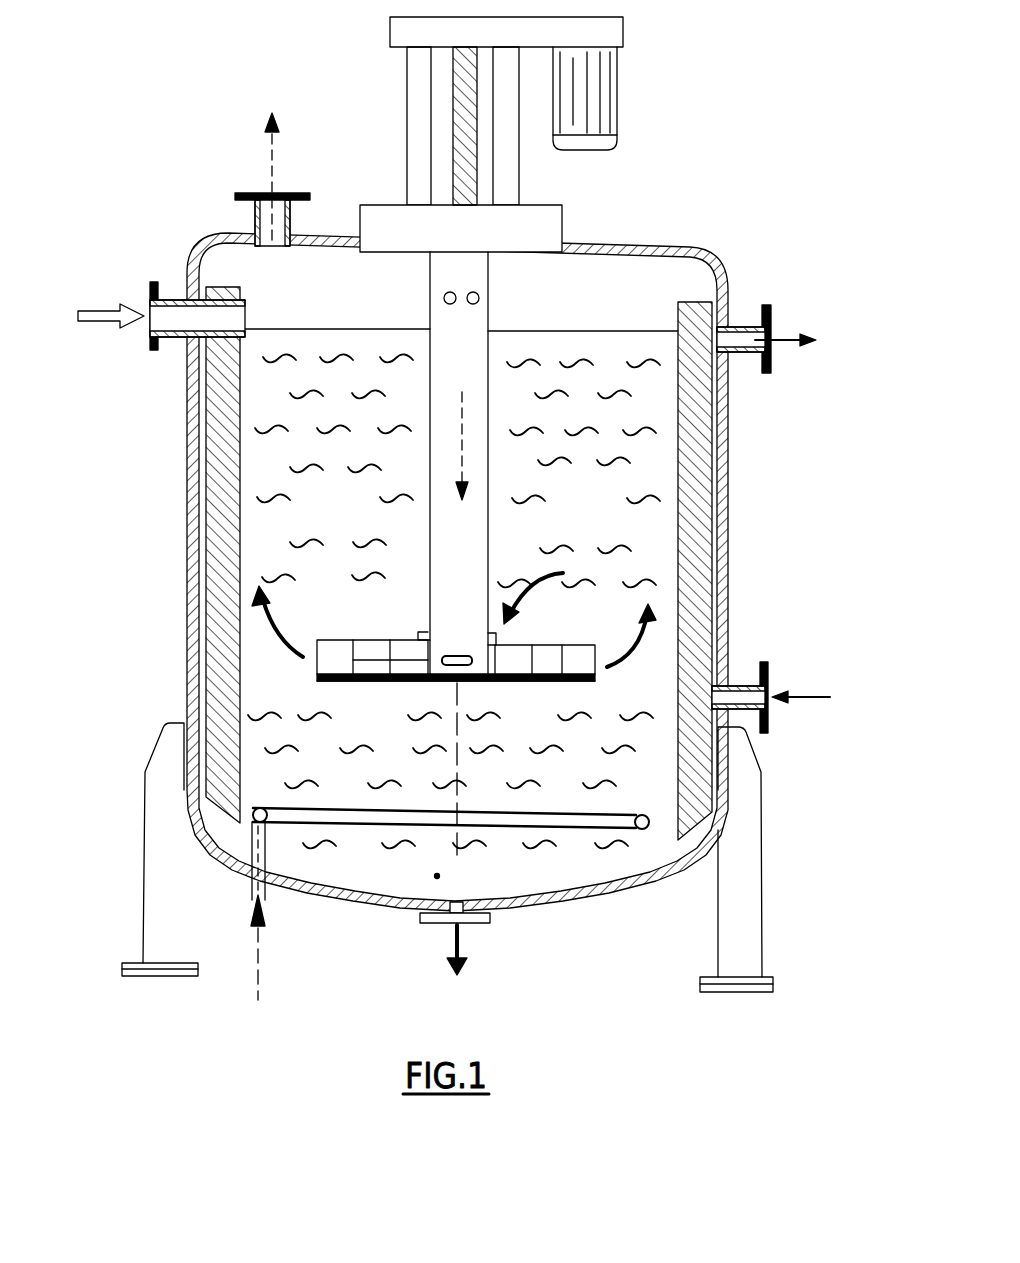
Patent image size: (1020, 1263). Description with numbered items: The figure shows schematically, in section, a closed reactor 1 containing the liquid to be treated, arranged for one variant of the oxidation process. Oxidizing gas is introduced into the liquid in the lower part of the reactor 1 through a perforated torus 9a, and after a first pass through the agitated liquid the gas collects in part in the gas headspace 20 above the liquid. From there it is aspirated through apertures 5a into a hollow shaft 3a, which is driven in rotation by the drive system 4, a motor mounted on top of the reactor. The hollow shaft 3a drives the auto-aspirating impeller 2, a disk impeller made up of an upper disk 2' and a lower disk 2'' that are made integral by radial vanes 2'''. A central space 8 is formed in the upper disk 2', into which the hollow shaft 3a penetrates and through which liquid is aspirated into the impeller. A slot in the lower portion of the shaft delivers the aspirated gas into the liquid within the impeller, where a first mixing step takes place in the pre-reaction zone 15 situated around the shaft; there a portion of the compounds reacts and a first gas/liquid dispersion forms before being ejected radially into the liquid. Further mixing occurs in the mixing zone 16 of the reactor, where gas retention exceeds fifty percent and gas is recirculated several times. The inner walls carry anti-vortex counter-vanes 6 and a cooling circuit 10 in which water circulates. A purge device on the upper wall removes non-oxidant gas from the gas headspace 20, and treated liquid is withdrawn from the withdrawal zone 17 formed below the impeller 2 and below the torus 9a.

The closed reactor 1 is at (750, 519).
The auto-aspirating impeller 2 is at (546, 741).
The upper disk 2' is at (370, 620).
The lower disk 2'' is at (456, 714).
The radial vanes 2''' is at (548, 635).
The hollow shaft 3a is at (478, 417).
The drive system 4 is at (600, 88).
The apertures 5a is at (454, 292).
The anti-vortex counter-vanes 6 is at (222, 577).
The central space 8 is at (428, 615).
The torus 9a is at (570, 824).
The cooling circuit 10 is at (200, 539).
The pre-reaction zone 15 is at (410, 653).
The mixing zone 16 is at (270, 452).
The withdrawal zone 17 is at (437, 877).
The gas headspace 20 is at (585, 309).